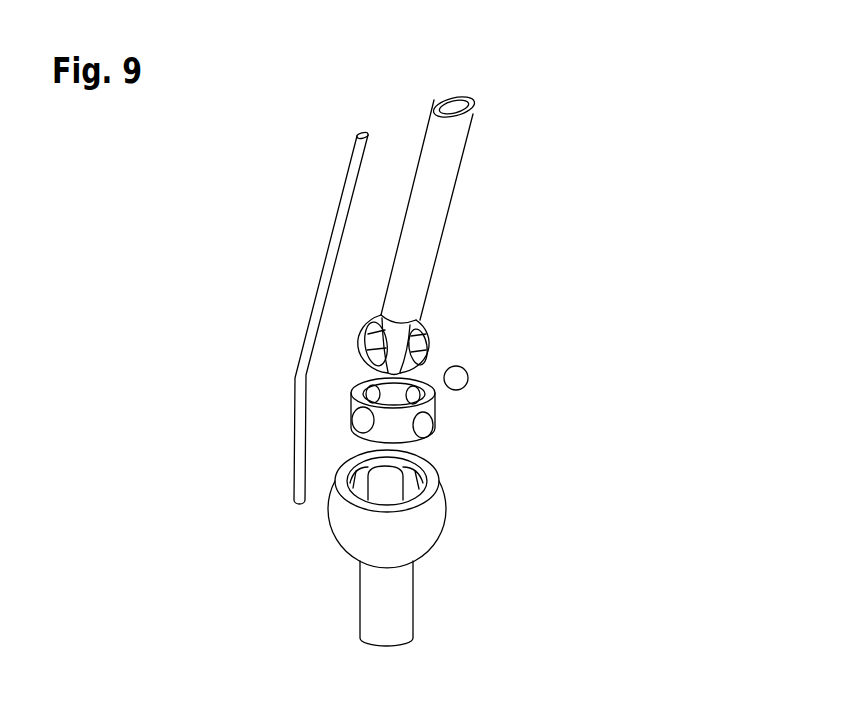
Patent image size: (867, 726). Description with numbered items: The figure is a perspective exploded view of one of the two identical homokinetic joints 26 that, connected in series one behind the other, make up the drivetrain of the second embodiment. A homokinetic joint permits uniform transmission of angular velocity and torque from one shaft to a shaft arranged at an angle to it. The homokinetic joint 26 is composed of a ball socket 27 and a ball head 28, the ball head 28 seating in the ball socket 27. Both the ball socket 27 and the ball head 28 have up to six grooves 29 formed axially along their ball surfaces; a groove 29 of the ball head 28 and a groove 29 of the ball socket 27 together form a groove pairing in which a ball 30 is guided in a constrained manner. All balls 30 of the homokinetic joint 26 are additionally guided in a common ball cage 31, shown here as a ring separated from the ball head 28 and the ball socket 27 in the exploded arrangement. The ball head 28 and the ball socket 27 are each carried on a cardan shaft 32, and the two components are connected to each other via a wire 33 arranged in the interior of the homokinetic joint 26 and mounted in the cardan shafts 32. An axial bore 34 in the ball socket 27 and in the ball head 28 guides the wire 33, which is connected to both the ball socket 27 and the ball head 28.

The homokinetic joint 26 is at (605, 328).
The ball socket 27 is at (432, 523).
The ball head 28 is at (402, 320).
The groove 29 is at (418, 348).
The ball 30 is at (458, 383).
The ball cage 31 is at (402, 425).
The cardan shaft 32 is at (435, 210).
The wire 33 is at (320, 290).
The axial bore 34 is at (453, 103).